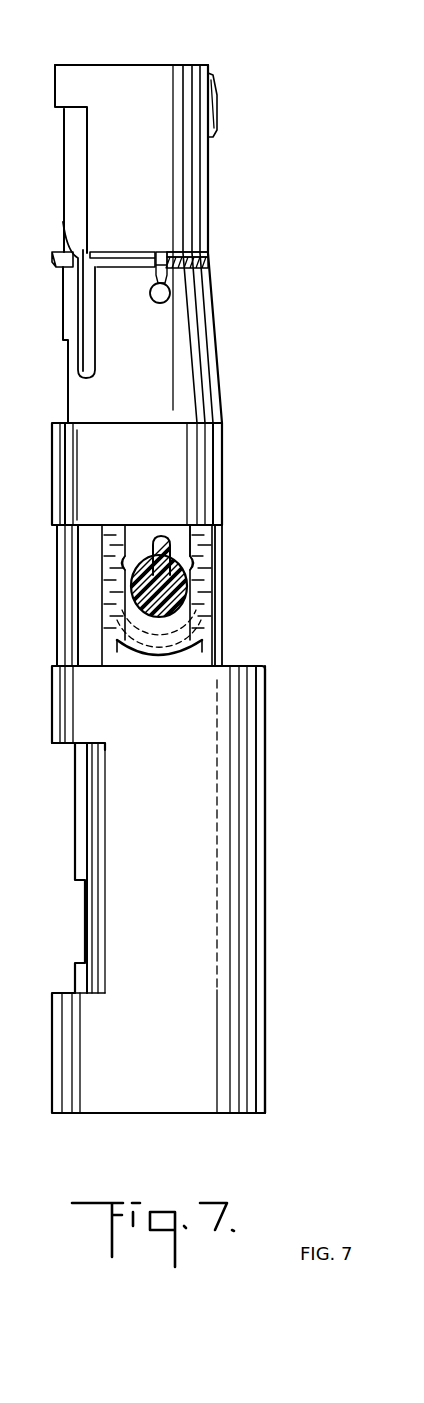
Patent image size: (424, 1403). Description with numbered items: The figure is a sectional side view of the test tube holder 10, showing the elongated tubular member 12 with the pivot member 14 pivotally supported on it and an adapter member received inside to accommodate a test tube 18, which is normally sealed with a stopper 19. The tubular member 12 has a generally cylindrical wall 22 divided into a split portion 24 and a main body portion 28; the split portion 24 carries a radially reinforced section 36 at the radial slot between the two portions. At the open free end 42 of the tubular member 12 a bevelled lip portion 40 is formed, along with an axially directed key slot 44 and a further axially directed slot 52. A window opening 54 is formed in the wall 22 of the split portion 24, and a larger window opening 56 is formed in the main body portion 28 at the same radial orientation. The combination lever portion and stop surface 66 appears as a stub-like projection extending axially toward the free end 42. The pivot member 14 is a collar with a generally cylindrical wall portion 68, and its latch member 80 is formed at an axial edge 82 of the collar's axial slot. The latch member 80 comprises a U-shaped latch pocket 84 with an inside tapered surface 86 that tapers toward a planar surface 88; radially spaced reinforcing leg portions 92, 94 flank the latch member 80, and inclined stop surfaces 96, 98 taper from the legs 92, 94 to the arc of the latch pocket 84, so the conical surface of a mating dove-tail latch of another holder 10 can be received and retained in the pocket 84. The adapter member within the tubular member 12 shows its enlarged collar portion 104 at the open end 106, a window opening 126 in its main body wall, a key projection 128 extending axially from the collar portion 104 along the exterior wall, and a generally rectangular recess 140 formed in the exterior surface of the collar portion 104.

The test tube holder 10 is at (207, 53).
The tubular member 12 is at (229, 381).
The pivot member 14 is at (55, 630).
The test tube 18 is at (223, 118).
The stopper 19 is at (212, 90).
The cylindrical wall 22 is at (267, 856).
The split portion 24 is at (218, 336).
The main body portion 28 is at (185, 871).
The radially reinforced section 36 is at (162, 458).
The bevelled lip portion 40 is at (184, 253).
The open free end 42 is at (63, 237).
The key slot 44 is at (215, 281).
The axially directed slot 52 is at (97, 360).
The window opening 54 is at (68, 388).
The window opening 56 is at (58, 745).
The combination lever portion and stop surface 66 is at (157, 535).
The cylindrical wall portion 68 is at (57, 590).
The latch member 80 is at (218, 580).
The axial edge 82 is at (223, 606).
The U-shaped latch pocket 84 is at (157, 616).
The inside tapered surface 86 is at (182, 656).
The planar surface 88 is at (192, 543).
The reinforcing leg portion 92 is at (127, 527).
The reinforcing leg portion 94 is at (200, 522).
The inclined stop surface 96 is at (108, 548).
The inclined stop surface 98 is at (198, 557).
The enlarged collar portion 104 is at (158, 158).
The open end 106 is at (116, 64).
The window opening 126 is at (84, 917).
The key projection 128 is at (168, 298).
The rectangular recess 140 is at (64, 163).